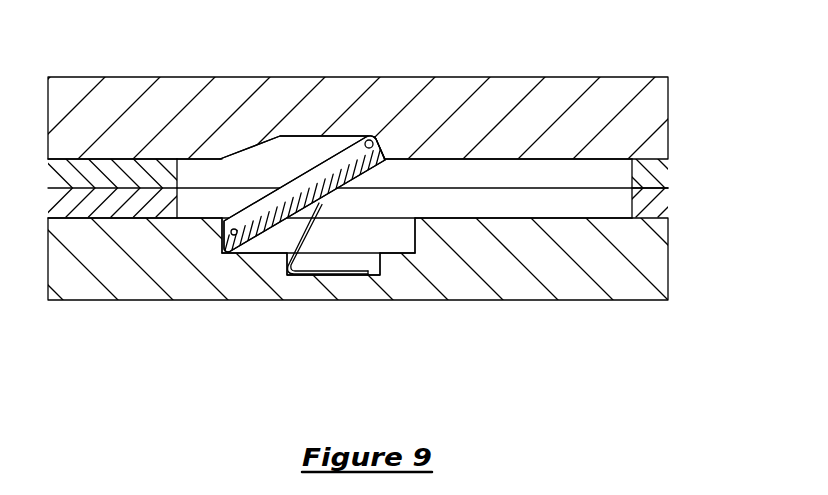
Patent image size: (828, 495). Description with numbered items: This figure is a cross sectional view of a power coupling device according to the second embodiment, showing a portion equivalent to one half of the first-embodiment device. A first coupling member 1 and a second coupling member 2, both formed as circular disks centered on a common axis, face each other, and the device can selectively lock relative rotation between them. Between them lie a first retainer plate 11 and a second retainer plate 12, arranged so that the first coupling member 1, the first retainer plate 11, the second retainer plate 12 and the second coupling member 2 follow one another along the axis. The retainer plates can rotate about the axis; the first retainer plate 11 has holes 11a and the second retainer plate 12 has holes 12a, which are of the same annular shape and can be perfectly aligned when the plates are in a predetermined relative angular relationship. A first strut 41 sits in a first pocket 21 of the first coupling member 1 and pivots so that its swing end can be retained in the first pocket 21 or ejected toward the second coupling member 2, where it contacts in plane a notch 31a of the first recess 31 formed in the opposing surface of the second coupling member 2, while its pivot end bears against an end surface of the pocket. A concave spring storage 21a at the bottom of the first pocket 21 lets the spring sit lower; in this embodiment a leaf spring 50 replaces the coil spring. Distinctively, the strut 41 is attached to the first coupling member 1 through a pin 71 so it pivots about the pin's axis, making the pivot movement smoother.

The first coupling member 1 is at (568, 277).
The second coupling member 2 is at (560, 97).
The first retainer plate 11 is at (83, 205).
The hole 11a is at (200, 207).
The second retainer plate 12 is at (105, 170).
The hole 12a is at (203, 170).
The first pocket 21 is at (393, 237).
The spring storage 21a is at (352, 267).
The first recess 31 is at (308, 148).
The notch 31a is at (362, 153).
The first strut 41 is at (347, 157).
The leaf spring 50 is at (317, 240).
The pivot pin 71 is at (238, 242).